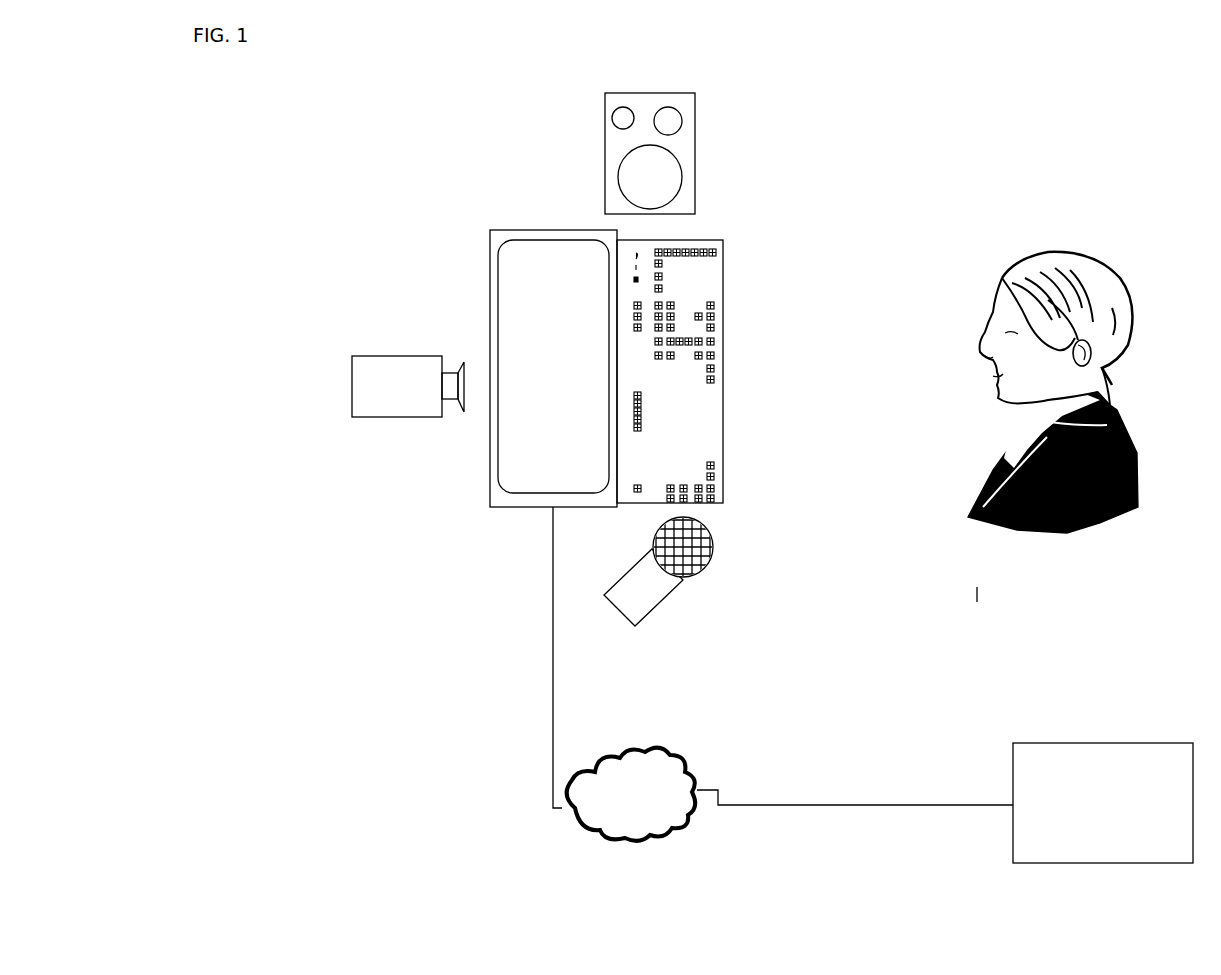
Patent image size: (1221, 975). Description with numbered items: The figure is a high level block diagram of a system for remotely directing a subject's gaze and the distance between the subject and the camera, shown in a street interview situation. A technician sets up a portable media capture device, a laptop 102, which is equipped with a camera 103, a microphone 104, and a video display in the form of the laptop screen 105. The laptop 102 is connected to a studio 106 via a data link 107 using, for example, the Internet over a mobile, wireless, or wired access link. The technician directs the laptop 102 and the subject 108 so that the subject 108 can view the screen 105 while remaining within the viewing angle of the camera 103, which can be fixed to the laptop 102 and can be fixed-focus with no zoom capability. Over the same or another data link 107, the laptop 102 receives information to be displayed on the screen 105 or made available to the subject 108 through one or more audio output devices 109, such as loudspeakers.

The laptop 102 is at (541, 344).
The camera 103 is at (352, 387).
The microphone 104 is at (712, 540).
The video display 105 is at (497, 433).
The studio 106 is at (1100, 863).
The data link 107 is at (614, 845).
The subject 108 is at (1070, 533).
The audio output device 109 is at (653, 93).